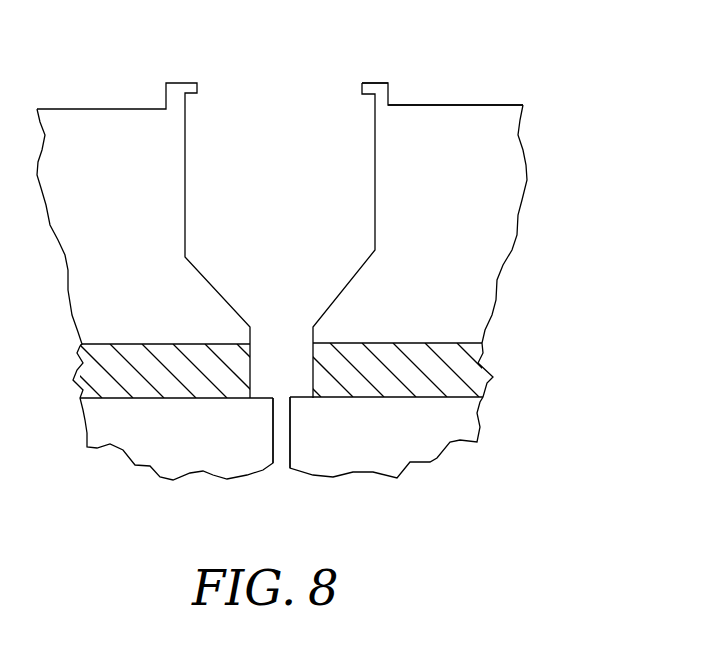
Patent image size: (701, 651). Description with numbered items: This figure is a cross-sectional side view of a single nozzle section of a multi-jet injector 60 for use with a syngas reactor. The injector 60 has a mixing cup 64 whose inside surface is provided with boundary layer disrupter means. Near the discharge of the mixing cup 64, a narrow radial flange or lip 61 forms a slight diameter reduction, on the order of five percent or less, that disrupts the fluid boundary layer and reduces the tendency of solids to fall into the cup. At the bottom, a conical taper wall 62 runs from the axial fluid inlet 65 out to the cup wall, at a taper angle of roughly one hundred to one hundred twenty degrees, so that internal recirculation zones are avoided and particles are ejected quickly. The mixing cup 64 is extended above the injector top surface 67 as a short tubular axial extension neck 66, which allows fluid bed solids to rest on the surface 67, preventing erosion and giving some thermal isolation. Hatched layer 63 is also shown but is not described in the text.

The injector 60 is at (351, 277).
The lip 61 is at (442, 66).
The taper wall 62 is at (357, 280).
The hatched layer 63 is at (353, 378).
The mixing cup 64 is at (377, 144).
The axial fluid inlet 65 is at (209, 462).
The tubular axial extension neck 66 is at (453, 56).
The top surface 67 is at (450, 103).